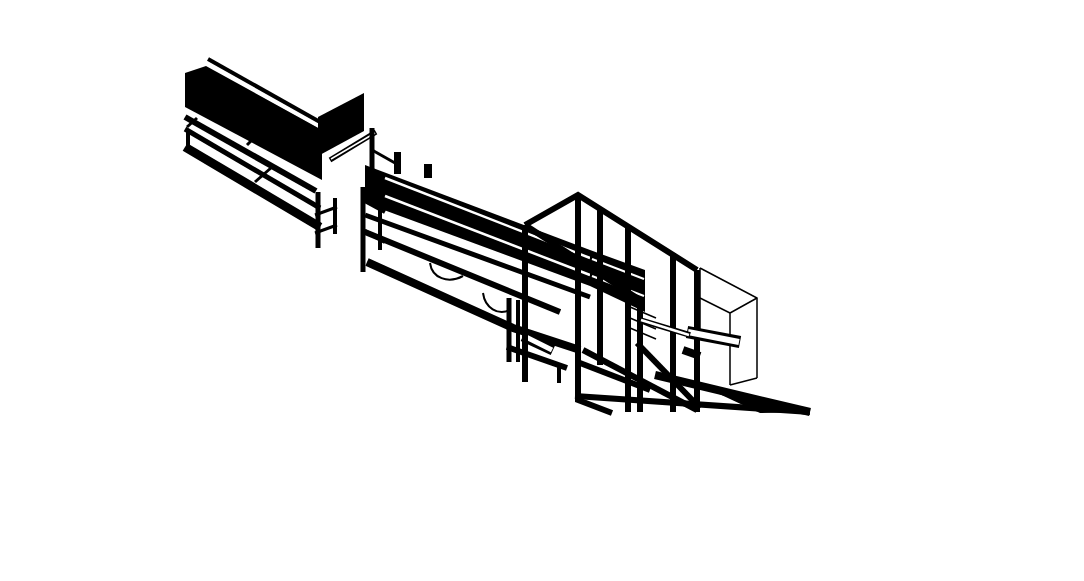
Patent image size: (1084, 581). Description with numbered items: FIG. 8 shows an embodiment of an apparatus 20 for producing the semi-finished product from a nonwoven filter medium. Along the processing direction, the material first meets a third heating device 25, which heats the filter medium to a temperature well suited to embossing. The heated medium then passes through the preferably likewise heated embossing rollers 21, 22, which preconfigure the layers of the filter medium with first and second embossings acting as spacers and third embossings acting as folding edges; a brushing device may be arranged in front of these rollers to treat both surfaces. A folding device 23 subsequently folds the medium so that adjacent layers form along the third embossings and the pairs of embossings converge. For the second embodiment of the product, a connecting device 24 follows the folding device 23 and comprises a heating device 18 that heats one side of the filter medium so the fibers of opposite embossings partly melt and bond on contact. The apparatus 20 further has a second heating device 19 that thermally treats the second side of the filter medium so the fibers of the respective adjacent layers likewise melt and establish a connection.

The heating device 18 is at (339, 103).
The second heating device 19 is at (299, 192).
The apparatus 20 is at (143, 112).
The embossing roller 21 is at (407, 166).
The embossing roller 22 is at (313, 226).
The folding device 23 is at (376, 163).
The connecting device 24 is at (356, 236).
The third heating device 25 is at (437, 177).